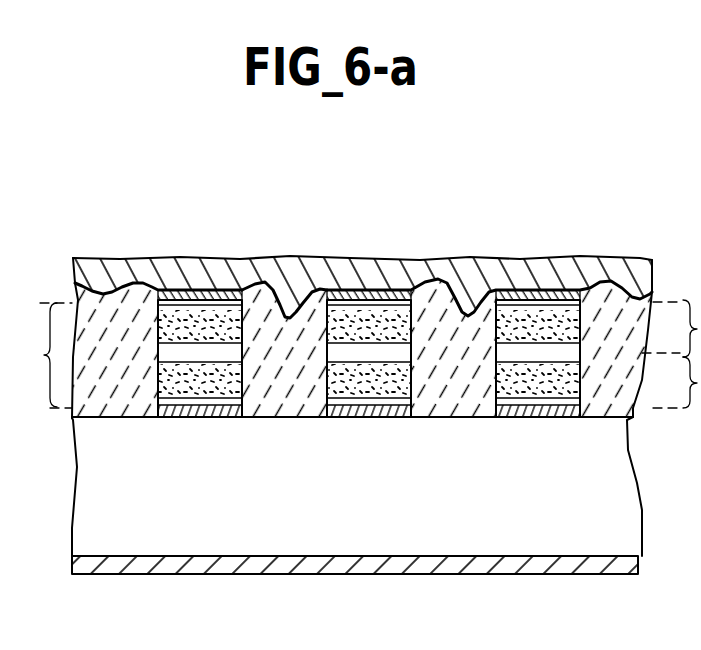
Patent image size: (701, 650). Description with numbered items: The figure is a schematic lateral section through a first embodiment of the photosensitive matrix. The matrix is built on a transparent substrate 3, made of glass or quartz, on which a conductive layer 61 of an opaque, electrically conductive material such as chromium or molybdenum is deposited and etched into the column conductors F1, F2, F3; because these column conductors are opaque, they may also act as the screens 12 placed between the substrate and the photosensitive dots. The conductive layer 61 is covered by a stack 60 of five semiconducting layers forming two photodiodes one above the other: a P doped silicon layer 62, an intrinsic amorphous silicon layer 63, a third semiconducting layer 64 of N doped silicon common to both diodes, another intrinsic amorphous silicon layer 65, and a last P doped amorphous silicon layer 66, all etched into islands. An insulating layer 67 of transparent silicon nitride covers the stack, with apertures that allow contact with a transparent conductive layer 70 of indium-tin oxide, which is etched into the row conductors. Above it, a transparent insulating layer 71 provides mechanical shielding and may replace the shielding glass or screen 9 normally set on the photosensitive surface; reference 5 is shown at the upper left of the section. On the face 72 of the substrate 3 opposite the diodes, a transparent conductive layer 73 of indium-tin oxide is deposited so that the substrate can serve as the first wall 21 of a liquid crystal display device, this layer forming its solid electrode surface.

The substrate 3 is at (80, 556).
The top layer edge 5 is at (38, 249).
The shielding transparent glass or screen 9 is at (635, 260).
The screens 12 is at (338, 420).
The first wall 21 is at (637, 553).
The stack 60 is at (359, 354).
The conductive layer 61 is at (215, 420).
The P doped silicon layer 62 is at (157, 408).
The intrinsic amorphous silicon layer 63 is at (150, 386).
The third semiconducting layer 64 is at (153, 358).
The intrinsic amorphous silicon layer 65 is at (326, 330).
The P doped amorphous silicon layer 66 is at (308, 288).
The insulating layer 67 is at (74, 367).
The conductive layer 70 is at (74, 298).
The transparent insulating layer 71 is at (118, 263).
The face 72 is at (70, 557).
The transparent conductive layer 73 is at (598, 567).
The column conductor F1 is at (188, 420).
The column conductor F2 is at (368, 420).
The column conductor F3 is at (527, 420).